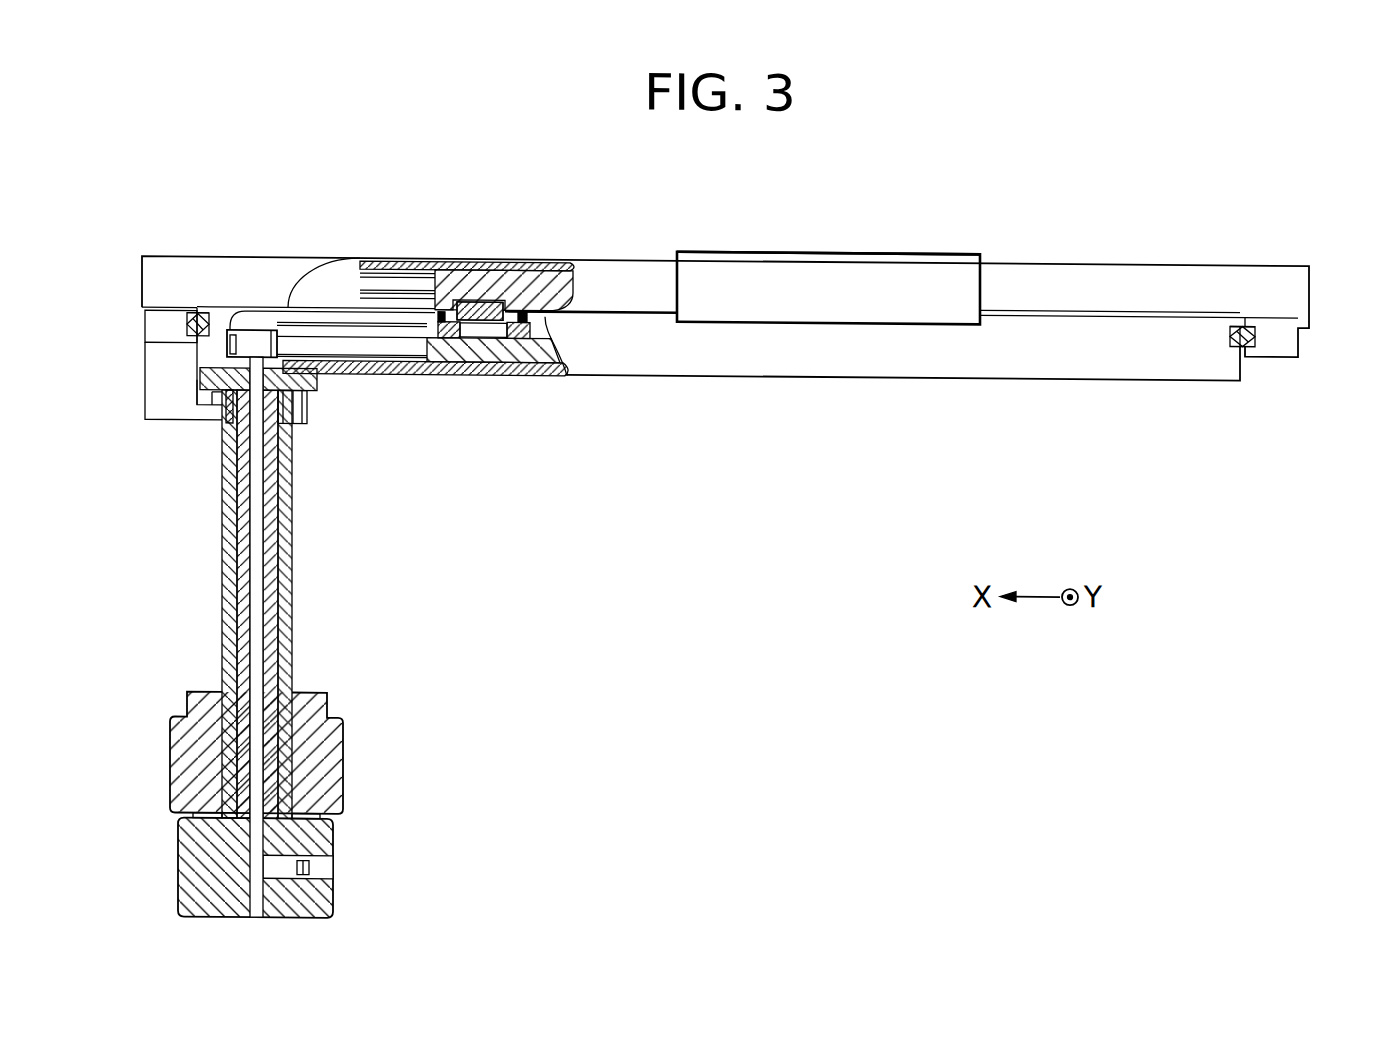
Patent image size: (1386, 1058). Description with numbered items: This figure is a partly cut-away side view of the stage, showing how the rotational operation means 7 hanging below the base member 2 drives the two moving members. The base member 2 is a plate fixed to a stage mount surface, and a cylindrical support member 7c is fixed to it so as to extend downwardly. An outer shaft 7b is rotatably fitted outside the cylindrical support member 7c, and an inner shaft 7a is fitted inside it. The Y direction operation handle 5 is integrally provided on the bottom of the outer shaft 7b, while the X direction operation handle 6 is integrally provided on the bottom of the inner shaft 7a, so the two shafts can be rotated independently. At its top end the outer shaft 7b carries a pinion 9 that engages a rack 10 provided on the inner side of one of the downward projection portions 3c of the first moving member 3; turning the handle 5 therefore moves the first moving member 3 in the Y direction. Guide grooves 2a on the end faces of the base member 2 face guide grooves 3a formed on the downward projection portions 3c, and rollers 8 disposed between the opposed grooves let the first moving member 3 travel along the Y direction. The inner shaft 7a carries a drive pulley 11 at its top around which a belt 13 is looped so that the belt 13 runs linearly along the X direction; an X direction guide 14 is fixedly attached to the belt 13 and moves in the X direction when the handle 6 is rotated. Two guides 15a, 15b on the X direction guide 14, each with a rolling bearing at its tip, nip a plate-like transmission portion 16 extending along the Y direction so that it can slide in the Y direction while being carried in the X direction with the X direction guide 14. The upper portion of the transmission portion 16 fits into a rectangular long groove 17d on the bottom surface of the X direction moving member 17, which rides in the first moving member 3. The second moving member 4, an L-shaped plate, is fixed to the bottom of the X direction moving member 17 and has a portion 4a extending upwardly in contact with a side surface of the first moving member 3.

The base member 2 is at (766, 354).
The guide groove 2a is at (213, 322).
The first moving member 3 is at (1080, 285).
The guide groove 3a is at (189, 312).
The downward projection portion 3c is at (160, 326).
The second moving member 4 is at (766, 290).
The portion 4a is at (918, 288).
The Y direction operation handle 5 is at (322, 743).
The X direction operation handle 6 is at (312, 840).
The rotational operation means 7 is at (298, 638).
The inner shaft 7a is at (258, 540).
The outer shaft 7b is at (285, 583).
The cylindrical support member 7c is at (270, 652).
The roller 8 is at (197, 320).
The pinion 9 is at (222, 416).
The rack 10 is at (212, 404).
The drive pulley 11 is at (300, 328).
The belt 13 is at (378, 342).
The X direction guide 14 is at (497, 346).
The guide 15a is at (447, 352).
The guide 15b is at (545, 348).
The transmission portion 16 is at (488, 306).
The X direction moving member 17 is at (548, 288).
The rectangular long groove 17d is at (462, 298).